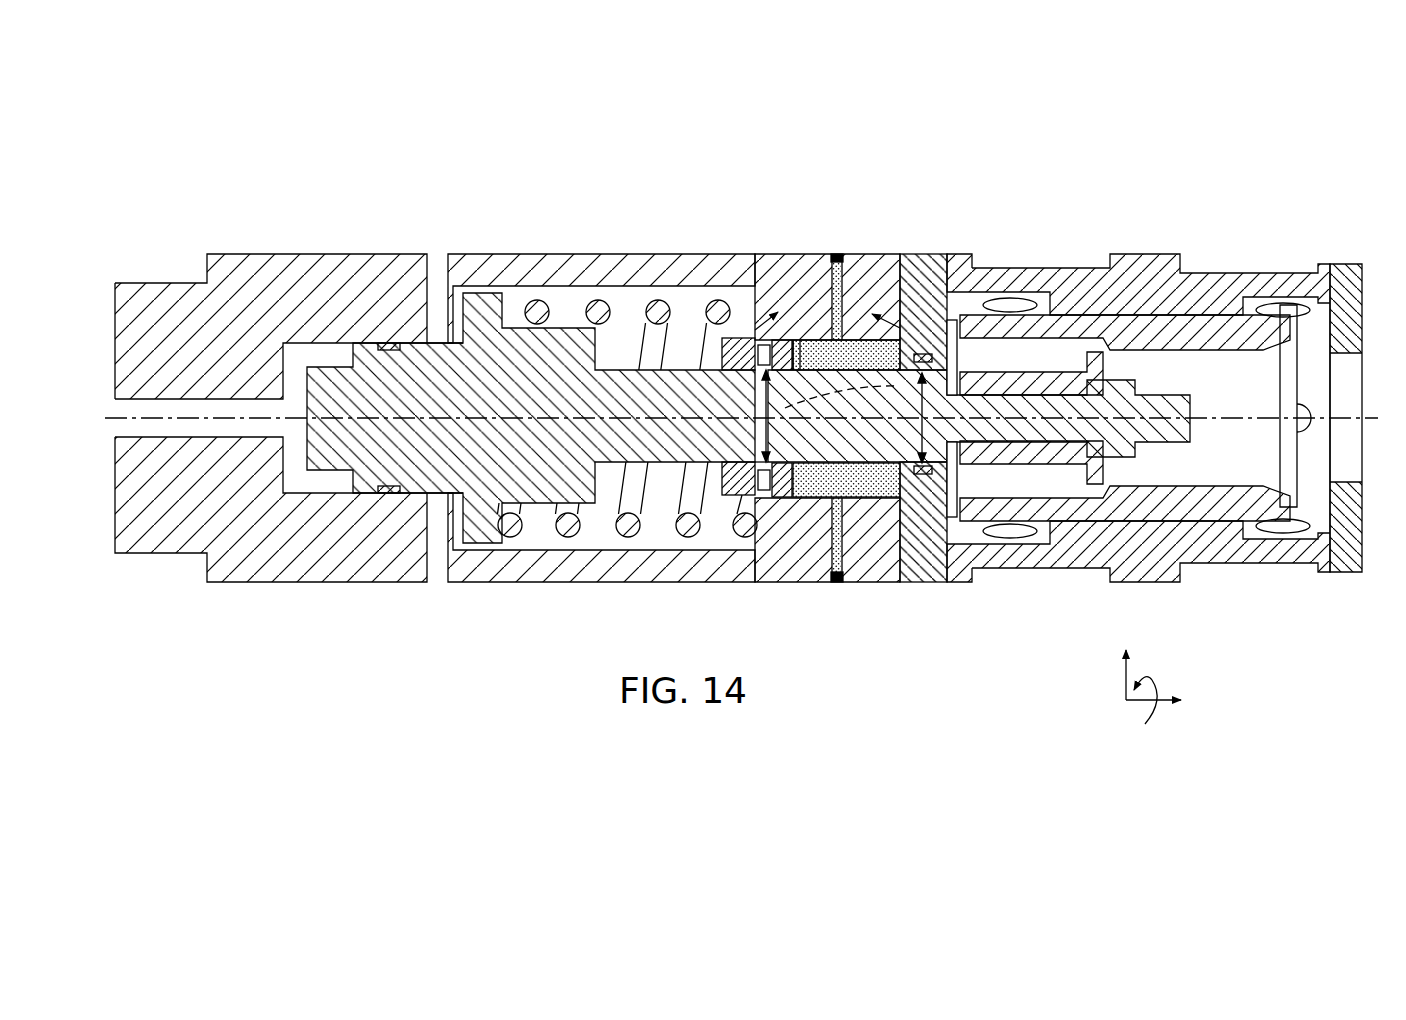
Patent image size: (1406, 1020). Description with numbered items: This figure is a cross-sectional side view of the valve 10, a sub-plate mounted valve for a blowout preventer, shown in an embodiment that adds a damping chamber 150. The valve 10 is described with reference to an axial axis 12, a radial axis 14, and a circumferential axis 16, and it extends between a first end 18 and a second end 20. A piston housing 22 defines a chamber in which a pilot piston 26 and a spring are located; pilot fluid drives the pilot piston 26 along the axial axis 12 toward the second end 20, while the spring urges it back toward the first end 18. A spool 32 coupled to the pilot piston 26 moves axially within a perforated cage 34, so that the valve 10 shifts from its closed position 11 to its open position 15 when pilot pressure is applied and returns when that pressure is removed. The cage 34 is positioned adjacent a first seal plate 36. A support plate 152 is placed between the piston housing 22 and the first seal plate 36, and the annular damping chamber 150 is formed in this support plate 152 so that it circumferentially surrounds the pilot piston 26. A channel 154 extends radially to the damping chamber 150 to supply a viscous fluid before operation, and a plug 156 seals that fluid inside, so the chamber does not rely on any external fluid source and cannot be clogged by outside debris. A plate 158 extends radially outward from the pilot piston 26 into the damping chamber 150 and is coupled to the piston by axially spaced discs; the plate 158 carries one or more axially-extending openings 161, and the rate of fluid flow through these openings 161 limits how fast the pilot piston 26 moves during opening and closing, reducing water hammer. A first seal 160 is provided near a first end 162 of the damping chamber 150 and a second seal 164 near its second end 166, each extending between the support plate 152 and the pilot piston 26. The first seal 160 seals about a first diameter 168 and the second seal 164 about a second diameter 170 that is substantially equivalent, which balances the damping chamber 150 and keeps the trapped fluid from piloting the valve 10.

The valve 10 is at (1235, 200).
The closed position 11 is at (1200, 182).
The axial axis 12 is at (1140, 700).
The radial axis 14 is at (1120, 682).
The open position 15 is at (827, 349).
The circumferential axis 16 is at (1158, 685).
The first end 18 is at (157, 230).
The second end 20 is at (1372, 266).
The piston housing 22 is at (678, 273).
The pilot piston 26 is at (520, 356).
The spool 32 is at (1012, 333).
The cage 34 is at (1022, 270).
The first seal plate 36 is at (937, 268).
The damping chamber 150 is at (868, 340).
The support plate 152 is at (777, 268).
The channel 154 is at (824, 340).
The plug 156 is at (837, 262).
The plate 158 is at (780, 490).
The first seal 160 is at (752, 340).
The axially-extending opening 161 is at (775, 342).
The first end of the damping chamber 162 is at (753, 380).
The second seal 164 is at (930, 300).
The second end of the damping chamber 166 is at (934, 357).
The first diameter 168 is at (762, 455).
The second diameter 170 is at (950, 430).